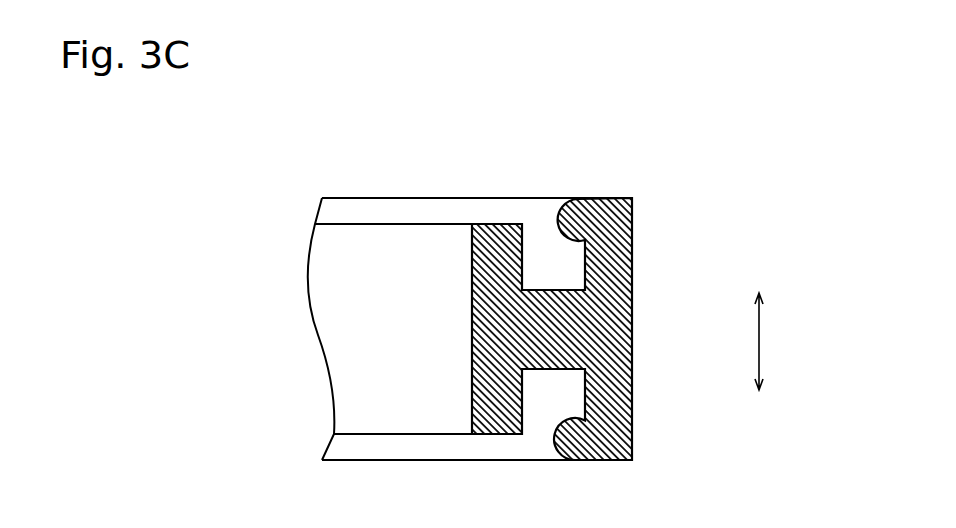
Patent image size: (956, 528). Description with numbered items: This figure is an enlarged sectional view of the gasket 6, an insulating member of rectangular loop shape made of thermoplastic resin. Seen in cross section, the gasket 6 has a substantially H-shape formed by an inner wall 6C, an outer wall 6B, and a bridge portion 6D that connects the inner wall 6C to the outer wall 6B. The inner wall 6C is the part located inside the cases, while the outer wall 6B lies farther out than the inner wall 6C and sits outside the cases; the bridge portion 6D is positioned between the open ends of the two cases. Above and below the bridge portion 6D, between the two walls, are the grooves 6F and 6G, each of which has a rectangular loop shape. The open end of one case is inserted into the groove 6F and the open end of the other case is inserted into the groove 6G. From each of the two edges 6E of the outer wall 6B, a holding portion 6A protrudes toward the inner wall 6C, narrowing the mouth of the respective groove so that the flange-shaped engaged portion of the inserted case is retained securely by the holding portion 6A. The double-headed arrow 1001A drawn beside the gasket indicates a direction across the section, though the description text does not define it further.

The gasket 6 is at (393, 213).
The holding portion 6A is at (562, 215).
The outer wall 6B is at (603, 290).
The inner wall 6C is at (487, 273).
The bridge portion 6D is at (560, 325).
The edge 6E is at (630, 198).
The groove 6F is at (542, 275).
The groove 6G is at (545, 393).
The axial direction 1001A is at (759, 358).